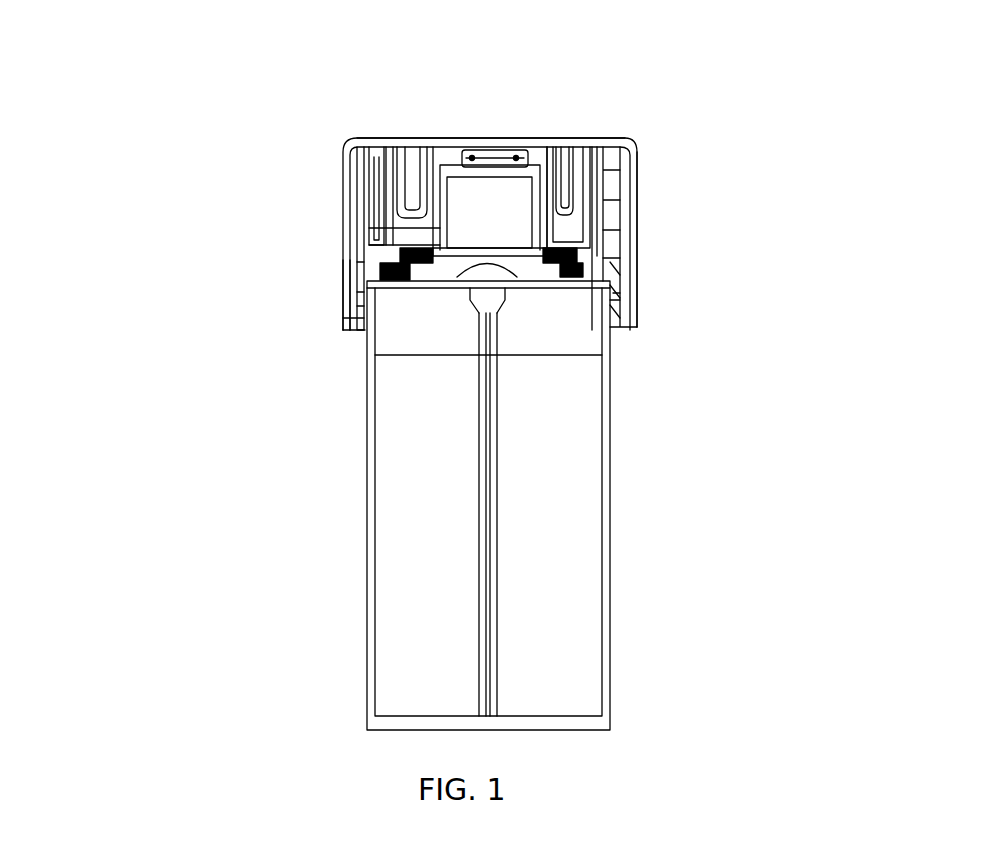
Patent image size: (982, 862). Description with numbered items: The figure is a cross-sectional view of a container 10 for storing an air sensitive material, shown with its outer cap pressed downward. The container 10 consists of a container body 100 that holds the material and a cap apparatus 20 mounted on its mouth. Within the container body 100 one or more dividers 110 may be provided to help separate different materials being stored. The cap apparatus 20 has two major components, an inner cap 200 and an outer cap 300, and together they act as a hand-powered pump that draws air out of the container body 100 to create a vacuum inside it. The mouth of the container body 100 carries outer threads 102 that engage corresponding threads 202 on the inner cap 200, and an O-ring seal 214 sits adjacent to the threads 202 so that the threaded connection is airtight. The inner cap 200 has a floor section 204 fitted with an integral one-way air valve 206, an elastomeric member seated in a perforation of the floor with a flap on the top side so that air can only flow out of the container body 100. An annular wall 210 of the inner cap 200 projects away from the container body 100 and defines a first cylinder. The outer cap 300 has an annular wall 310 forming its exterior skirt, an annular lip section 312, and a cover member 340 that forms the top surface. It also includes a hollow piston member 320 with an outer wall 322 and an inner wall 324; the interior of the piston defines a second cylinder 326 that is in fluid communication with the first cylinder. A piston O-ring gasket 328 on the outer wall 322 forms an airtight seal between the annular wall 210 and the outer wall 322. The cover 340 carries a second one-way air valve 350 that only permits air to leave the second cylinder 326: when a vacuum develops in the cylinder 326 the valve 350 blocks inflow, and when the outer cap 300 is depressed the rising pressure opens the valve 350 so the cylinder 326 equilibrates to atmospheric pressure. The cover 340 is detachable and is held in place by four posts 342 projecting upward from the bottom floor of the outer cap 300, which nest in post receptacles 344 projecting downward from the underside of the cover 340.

The container 10 is at (800, 436).
The cap apparatus 20 is at (127, 243).
The container body 100 is at (611, 563).
The outer threads 102 is at (611, 283).
The divider 110 is at (500, 652).
The inner cap 200 is at (341, 305).
The threads 202 is at (613, 293).
The floor section 204 is at (634, 213).
The one-way air valve 206 is at (517, 293).
The annular wall 210 is at (634, 183).
The O-ring seal 214 is at (634, 258).
The outer cap 300 is at (341, 265).
The annular wall 310 is at (341, 326).
The annular lip section 312 is at (628, 139).
The hollow piston member 320 is at (430, 147).
The outer wall 322 is at (577, 135).
The inner wall 324 is at (554, 135).
The second cylinder 326 is at (447, 140).
The piston O-ring gasket 328 is at (634, 247).
The cover member 340 is at (537, 135).
The posts 342 is at (357, 221).
The post receptacles 344 is at (372, 142).
The second one-way air valve 350 is at (496, 151).